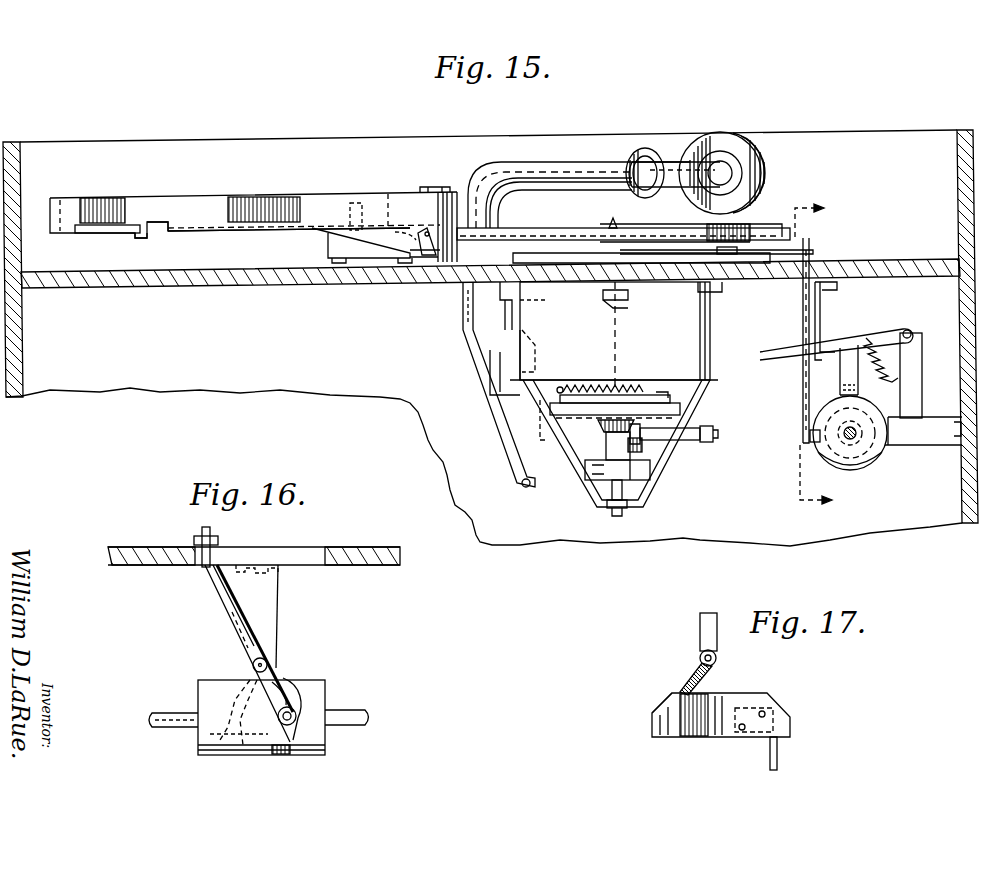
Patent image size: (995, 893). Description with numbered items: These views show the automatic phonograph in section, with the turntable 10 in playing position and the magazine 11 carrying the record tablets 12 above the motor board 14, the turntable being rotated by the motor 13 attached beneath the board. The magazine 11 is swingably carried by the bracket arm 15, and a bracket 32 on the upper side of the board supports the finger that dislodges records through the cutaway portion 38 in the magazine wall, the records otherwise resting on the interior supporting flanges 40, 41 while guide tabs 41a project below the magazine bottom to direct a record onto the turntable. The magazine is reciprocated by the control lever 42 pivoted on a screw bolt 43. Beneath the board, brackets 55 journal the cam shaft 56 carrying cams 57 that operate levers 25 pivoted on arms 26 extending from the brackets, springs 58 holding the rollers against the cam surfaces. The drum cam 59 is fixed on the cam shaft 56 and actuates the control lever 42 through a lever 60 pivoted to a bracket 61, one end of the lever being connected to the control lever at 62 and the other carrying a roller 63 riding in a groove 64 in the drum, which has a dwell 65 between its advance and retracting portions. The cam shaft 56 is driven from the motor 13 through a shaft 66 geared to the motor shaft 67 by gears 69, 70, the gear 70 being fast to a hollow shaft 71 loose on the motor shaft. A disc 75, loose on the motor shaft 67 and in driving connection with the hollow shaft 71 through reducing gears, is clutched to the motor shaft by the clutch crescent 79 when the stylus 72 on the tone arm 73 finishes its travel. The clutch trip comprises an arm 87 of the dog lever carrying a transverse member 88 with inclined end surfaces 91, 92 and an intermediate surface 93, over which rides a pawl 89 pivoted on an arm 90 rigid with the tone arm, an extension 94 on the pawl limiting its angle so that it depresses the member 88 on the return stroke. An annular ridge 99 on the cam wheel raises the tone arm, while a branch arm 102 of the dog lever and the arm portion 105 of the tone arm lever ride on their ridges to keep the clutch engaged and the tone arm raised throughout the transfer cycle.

In FIG. 15, the turntable 10 is at (752, 236).
In FIG. 15, the magazine 11 is at (178, 197).
In FIG. 15, the record tablets 12 is at (538, 228).
In FIG. 15, the motor 13 is at (712, 324).
In FIG. 15, the motor board 14 is at (243, 288).
In FIG. 15, the bracket arm 15 is at (399, 194).
In FIG. 15, the levers 25 is at (770, 352).
In FIG. 15, the arms 26 is at (916, 362).
In FIG. 15, the bracket 32 is at (414, 245).
In FIG. 15, the cutaway portion 38 is at (162, 228).
In FIG. 15, the supporting flange 40 is at (97, 233).
In FIG. 15, the supporting flange 41 is at (210, 231).
In FIG. 15, the guide tabs 41a is at (140, 238).
In FIG. 15, the control lever 42 is at (814, 251).
In FIG. 16, the control lever 42 is at (219, 541).
In FIG. 15, the screw bolt 43 is at (725, 288).
In FIG. 15, the brackets 55 is at (946, 447).
In FIG. 15, the cam shaft 56 is at (857, 438).
In FIG. 16, the cam shaft 56 is at (366, 710).
In FIG. 15, the cams 57 is at (850, 462).
In FIG. 15, the springs 58 is at (888, 382).
In FIG. 15, the drum cam 59 is at (840, 396).
In FIG. 16, the drum cam 59 is at (302, 682).
In FIG. 15, the lever 60 is at (803, 383).
In FIG. 16, the lever 60 is at (234, 630).
In FIG. 16, the bracket 61 is at (272, 590).
In FIG. 16, the connection 62 is at (201, 532).
In FIG. 15, the roller 63 is at (818, 442).
In FIG. 16, the roller 63 is at (295, 725).
In FIG. 16, the groove 64 is at (283, 754).
In FIG. 16, the dwell 65 is at (225, 742).
In FIG. 15, the shaft 66 is at (718, 434).
In FIG. 15, the motor shaft 67 is at (620, 350).
In FIG. 15, the gear 69 is at (645, 440).
In FIG. 15, the gear 70 is at (600, 427).
In FIG. 15, the hollow shaft 71 is at (610, 441).
In FIG. 15, the stylus 72 is at (733, 222).
In FIG. 15, the tone arm 73 is at (525, 170).
In FIG. 15, the disc 75 is at (690, 409).
In FIG. 15, the clutch crescent 79 is at (698, 392).
In FIG. 17, the arm 87 is at (778, 752).
In FIG. 17, the member 88 is at (720, 740).
In FIG. 17, the pawl 89 is at (686, 680).
In FIG. 17, the arm 90 is at (709, 613).
In FIG. 17, the end surface 91 is at (654, 708).
In FIG. 17, the end surface 92 is at (790, 705).
In FIG. 17, the intermediate surface 93 is at (728, 697).
In FIG. 17, the extension 94 is at (718, 655).
In FIG. 15, the annular ridge 99 is at (640, 472).
In FIG. 15, the branch arm 102 is at (555, 467).
In FIG. 15, the arm portion 105 is at (590, 490).